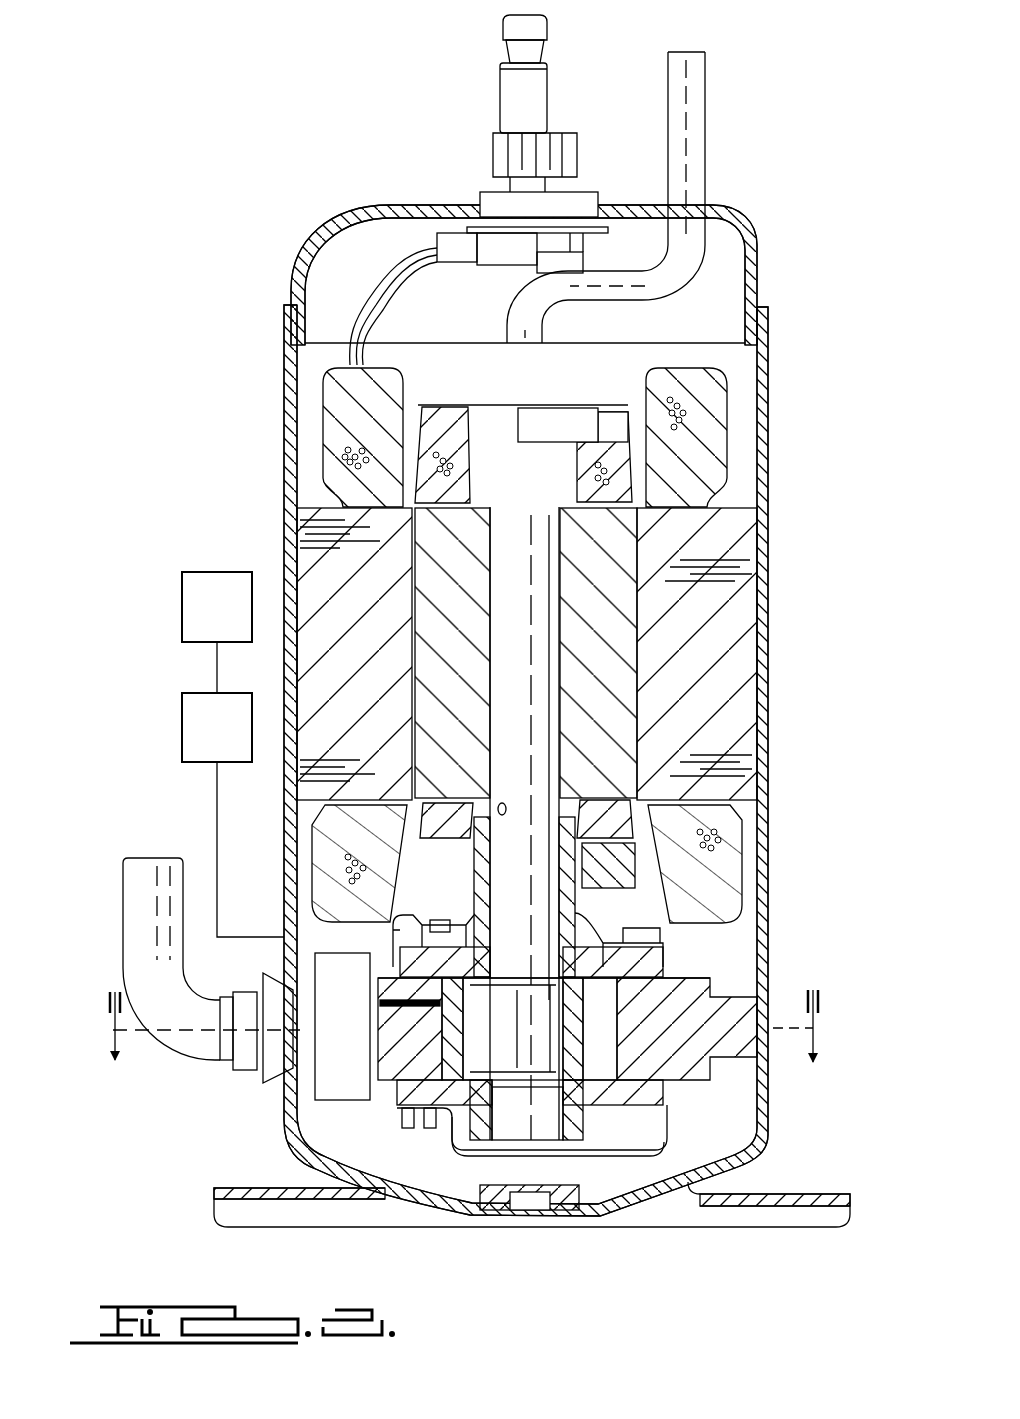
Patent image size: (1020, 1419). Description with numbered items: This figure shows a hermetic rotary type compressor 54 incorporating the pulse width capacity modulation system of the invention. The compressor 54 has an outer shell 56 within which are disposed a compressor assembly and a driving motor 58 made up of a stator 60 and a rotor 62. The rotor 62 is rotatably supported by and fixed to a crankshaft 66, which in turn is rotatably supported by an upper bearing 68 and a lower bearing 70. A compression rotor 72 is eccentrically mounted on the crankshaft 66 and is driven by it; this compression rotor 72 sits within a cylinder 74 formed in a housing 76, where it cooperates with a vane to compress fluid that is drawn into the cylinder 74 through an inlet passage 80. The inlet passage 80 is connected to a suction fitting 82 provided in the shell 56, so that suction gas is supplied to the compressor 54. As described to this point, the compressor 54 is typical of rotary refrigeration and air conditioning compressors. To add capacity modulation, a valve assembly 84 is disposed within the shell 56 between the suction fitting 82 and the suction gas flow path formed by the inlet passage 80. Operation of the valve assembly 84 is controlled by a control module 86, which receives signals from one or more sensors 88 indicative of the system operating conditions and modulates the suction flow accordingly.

The hermetic rotary type compressor 54 is at (258, 297).
The outer shell 56 is at (770, 336).
The driving motor 58 is at (734, 492).
The stator 60 is at (742, 612).
The rotor 62 is at (617, 663).
The crankshaft 66 is at (540, 727).
The upper bearing 68 is at (567, 870).
The lower bearing 70 is at (603, 1143).
The compression rotor 72 is at (650, 985).
The cylinder 74 is at (610, 1050).
The housing 76 is at (740, 1012).
The inlet passage 80 is at (413, 1050).
The suction fitting 82 is at (133, 882).
The valve assembly 84 is at (320, 1095).
The control module 86 is at (192, 723).
The sensors 88 is at (192, 600).